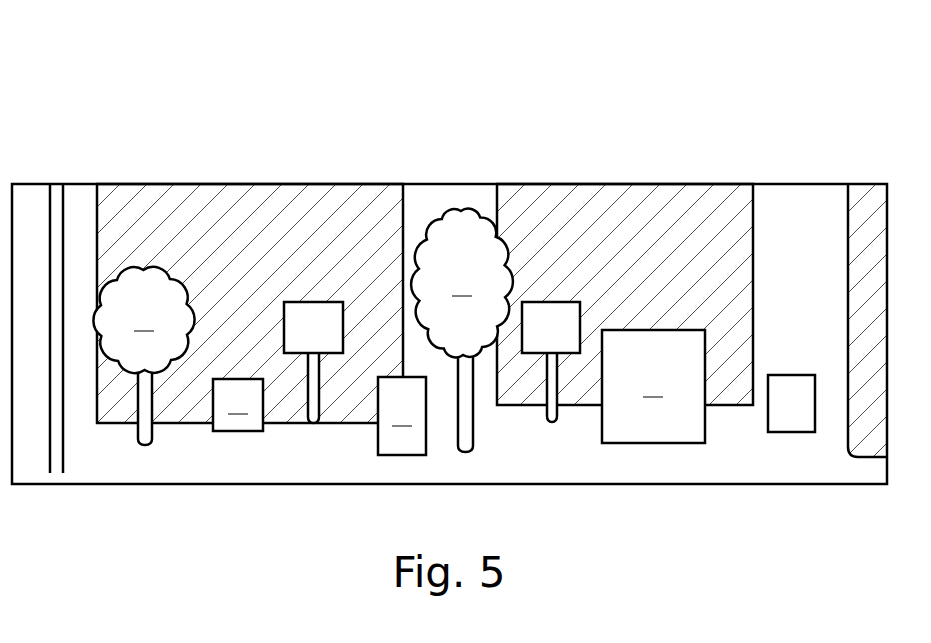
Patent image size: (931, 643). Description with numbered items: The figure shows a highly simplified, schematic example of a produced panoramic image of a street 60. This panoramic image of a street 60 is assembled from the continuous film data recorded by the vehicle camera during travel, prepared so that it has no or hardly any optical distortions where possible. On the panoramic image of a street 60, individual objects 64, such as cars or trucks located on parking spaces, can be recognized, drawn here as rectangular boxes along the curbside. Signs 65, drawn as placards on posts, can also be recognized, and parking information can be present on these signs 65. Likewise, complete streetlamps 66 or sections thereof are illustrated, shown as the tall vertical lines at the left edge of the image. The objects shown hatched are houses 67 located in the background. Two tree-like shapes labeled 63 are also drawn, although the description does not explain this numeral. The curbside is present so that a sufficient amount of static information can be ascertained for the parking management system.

The panoramic image of a street 60 is at (447, 141).
The tree 63 is at (303, 330).
The individual objects 64 is at (514, 392).
The signs 65 is at (432, 362).
The streetlamps 66 is at (57, 185).
The houses 67 is at (648, 197).